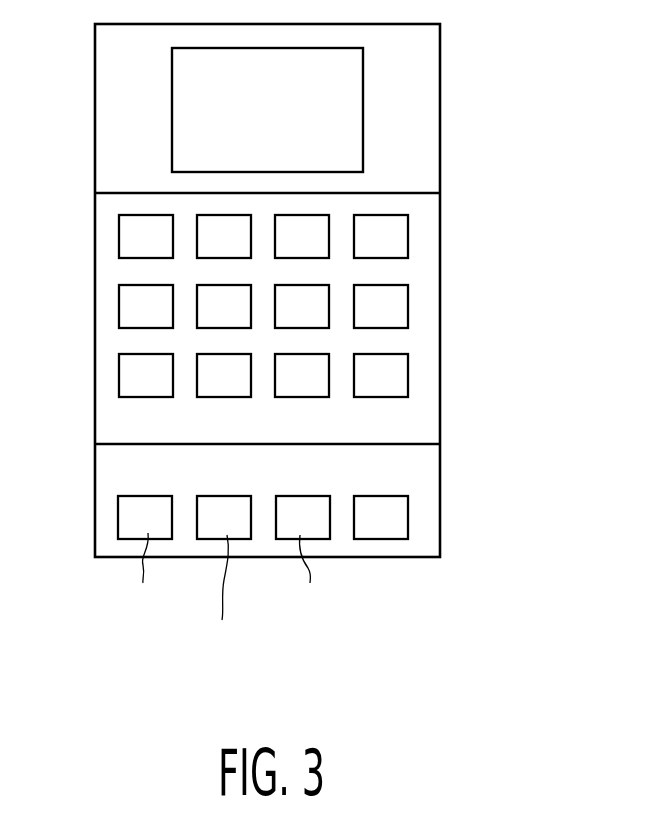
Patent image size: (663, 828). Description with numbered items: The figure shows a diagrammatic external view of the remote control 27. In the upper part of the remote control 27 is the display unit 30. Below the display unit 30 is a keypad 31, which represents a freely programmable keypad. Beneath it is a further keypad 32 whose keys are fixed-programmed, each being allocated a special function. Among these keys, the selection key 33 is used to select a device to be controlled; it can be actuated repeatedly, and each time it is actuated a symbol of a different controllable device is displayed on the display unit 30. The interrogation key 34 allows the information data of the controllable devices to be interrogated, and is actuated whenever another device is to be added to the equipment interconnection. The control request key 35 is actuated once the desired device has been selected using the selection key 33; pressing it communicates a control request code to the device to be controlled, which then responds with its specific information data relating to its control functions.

The remote control 27 is at (431, 48).
The display unit 30 is at (355, 124).
The keypad 31 is at (428, 269).
The further keypad 32 is at (428, 478).
The selection key 33 is at (125, 518).
The interrogation key 34 is at (207, 498).
The control request key 35 is at (310, 498).